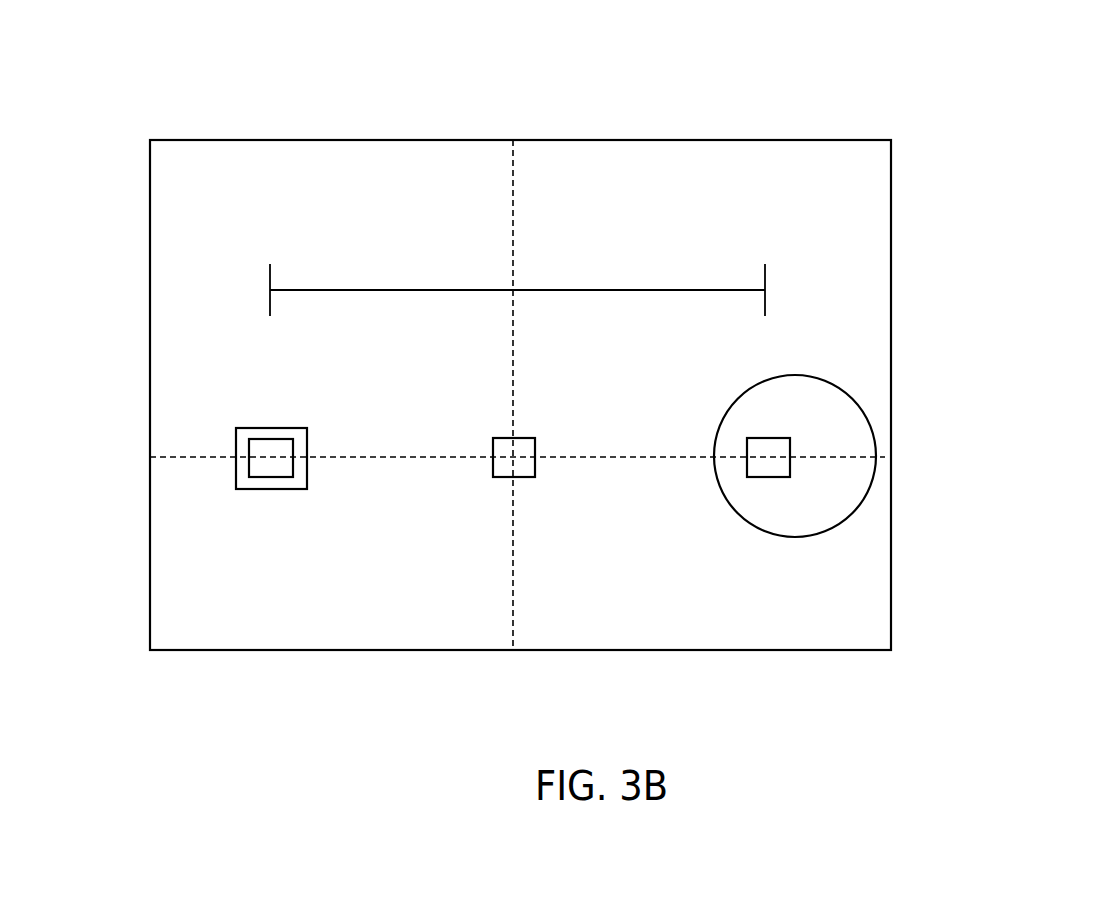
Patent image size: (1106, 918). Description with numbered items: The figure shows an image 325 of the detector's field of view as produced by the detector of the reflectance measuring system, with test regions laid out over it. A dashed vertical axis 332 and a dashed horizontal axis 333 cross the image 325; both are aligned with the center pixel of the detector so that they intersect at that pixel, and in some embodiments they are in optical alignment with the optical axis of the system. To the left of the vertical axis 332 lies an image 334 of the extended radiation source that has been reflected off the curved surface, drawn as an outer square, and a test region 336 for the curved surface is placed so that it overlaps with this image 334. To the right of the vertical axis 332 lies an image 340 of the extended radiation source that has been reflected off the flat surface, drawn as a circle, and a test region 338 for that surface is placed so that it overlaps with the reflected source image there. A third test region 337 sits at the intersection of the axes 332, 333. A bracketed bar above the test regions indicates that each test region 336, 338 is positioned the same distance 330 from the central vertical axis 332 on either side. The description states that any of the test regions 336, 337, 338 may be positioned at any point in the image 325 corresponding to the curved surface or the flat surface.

The image 325 is at (940, 134).
The distance 330 is at (423, 289).
The vertical axis 332 is at (511, 208).
The horizontal axis 333 is at (434, 455).
The image of the extended radiation source 334 is at (236, 432).
The test region 336 is at (248, 450).
The test region 337 is at (493, 438).
The test region 338 is at (790, 455).
The image of the extended radiation source 340 is at (875, 484).